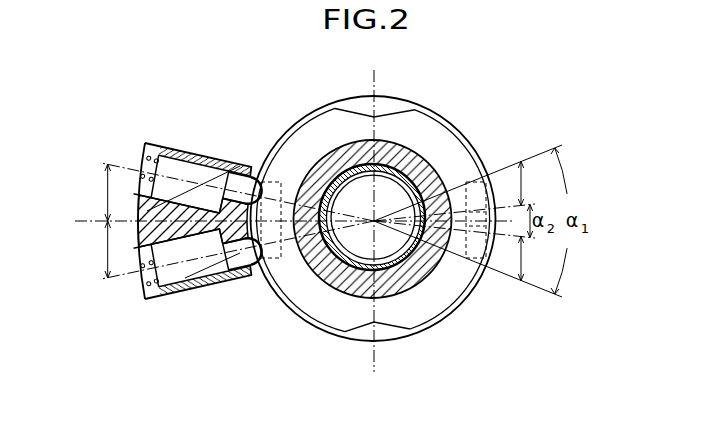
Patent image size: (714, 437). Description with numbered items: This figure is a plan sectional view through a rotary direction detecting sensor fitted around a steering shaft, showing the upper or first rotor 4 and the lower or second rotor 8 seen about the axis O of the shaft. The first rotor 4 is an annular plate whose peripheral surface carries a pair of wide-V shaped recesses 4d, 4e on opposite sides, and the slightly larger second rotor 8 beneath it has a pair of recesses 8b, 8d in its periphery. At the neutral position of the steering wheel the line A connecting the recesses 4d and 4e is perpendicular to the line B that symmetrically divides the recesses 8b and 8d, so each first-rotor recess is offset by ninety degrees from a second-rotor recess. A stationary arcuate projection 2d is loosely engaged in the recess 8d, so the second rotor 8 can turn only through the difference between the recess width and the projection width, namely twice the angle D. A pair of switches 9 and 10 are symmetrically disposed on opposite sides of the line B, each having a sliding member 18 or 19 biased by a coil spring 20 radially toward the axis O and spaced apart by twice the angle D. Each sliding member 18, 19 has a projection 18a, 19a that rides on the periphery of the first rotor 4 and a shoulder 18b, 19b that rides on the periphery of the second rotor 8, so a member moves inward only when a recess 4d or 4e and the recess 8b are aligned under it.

The arcuate projection 2d is at (488, 262).
The upper rotor 4 is at (452, 124).
The recess 4d is at (393, 104).
The recess 4e is at (388, 330).
The lower rotor 8 is at (347, 99).
The recess 8b is at (292, 262).
The recess 8d is at (488, 184).
The switch 9 is at (205, 91).
The switch 10 is at (148, 338).
The sliding member 18 is at (197, 154).
The projection 18a is at (236, 169).
The shoulder 18b is at (268, 177).
The sliding member 19 is at (199, 288).
The projection 19a is at (250, 285).
The shoulder 19b is at (274, 269).
The coil springs 20 is at (152, 145).
The axis O is at (372, 226).
The line A— A is at (374, 225).
The line B— B is at (299, 223).
The angle D is at (327, 221).